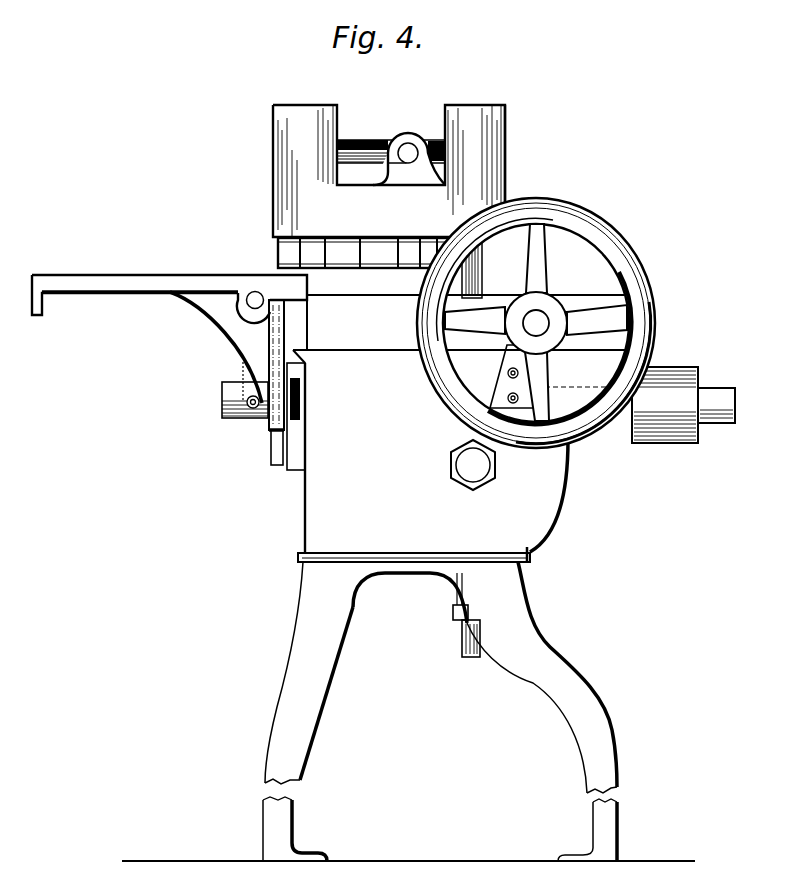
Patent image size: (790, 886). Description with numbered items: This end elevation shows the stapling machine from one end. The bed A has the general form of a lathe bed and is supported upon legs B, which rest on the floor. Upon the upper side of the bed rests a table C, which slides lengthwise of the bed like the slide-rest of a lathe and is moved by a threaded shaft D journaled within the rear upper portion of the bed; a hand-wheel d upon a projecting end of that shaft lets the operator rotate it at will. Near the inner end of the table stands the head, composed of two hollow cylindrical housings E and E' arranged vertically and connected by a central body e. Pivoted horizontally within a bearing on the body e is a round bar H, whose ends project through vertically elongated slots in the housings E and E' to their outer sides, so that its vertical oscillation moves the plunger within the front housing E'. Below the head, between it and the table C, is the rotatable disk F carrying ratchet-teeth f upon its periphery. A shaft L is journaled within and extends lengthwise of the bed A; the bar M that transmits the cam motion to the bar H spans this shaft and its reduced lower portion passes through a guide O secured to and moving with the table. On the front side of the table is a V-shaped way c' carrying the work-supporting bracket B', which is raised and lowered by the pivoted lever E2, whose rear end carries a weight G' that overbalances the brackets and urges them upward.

The front housing E' is at (374, 171).
The rear housing E is at (518, 154).
The round bar H is at (372, 150).
The central portion or body e is at (404, 212).
The disk F is at (364, 253).
The ratchet-teeth f is at (278, 254).
The bracket B' is at (169, 327).
The table C is at (466, 329).
The V-shaped way c' is at (265, 382).
The threaded shaft D is at (248, 360).
The bed A is at (427, 462).
The guide O is at (453, 613).
The shaft L is at (480, 465).
The weight G' is at (683, 405).
The hand-wheel d is at (636, 300).